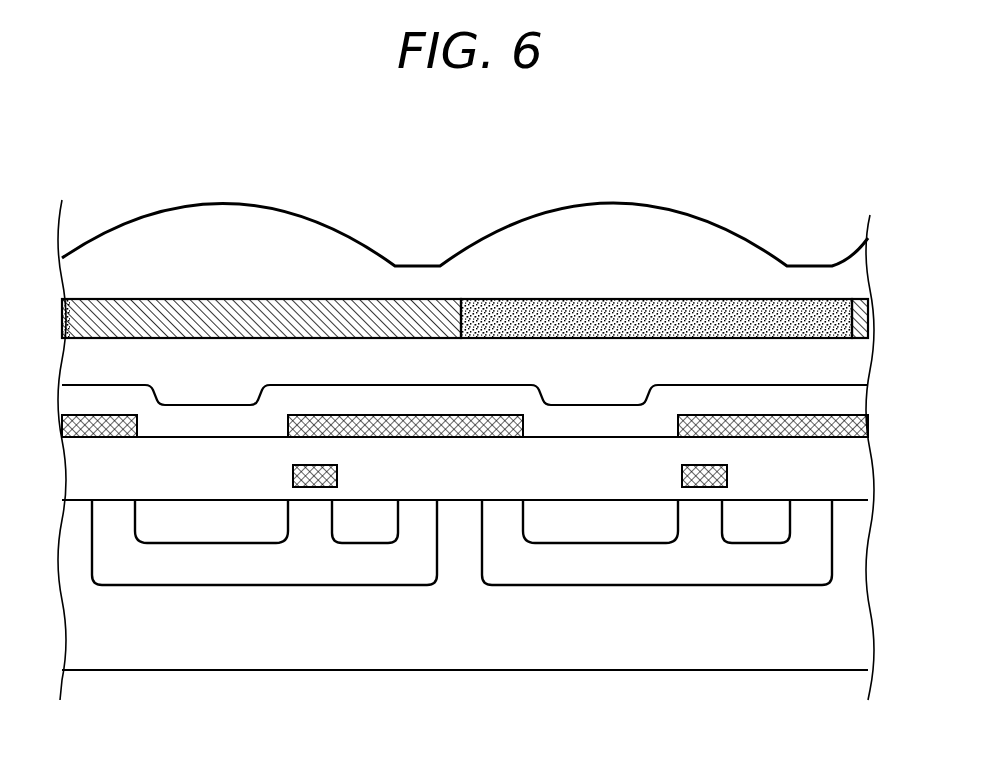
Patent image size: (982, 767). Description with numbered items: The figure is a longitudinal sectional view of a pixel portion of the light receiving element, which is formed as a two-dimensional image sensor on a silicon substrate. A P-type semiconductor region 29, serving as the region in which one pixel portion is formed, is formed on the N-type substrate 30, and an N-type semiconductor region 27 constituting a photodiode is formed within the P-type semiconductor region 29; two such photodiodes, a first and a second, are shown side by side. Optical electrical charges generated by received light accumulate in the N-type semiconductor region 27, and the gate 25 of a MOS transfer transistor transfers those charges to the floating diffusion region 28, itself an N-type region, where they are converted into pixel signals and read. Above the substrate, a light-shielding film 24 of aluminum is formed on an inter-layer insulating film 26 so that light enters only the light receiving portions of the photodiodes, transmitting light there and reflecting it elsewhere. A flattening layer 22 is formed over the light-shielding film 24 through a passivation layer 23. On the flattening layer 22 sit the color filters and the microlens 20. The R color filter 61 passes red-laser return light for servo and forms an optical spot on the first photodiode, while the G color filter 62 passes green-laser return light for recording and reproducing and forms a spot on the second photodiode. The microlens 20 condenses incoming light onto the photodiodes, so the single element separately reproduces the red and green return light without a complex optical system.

The microlens 20 is at (142, 235).
The flattening layer 22 is at (322, 362).
The passivation layer 23 is at (365, 400).
The light-shielding film 24 is at (122, 440).
The gate 25 is at (293, 476).
The inter-layer insulating film 26 is at (565, 468).
The N-type semiconductor region 27 is at (252, 538).
The floating diffusion region 28 is at (365, 535).
The P-type semiconductor region 29 is at (192, 577).
The N-type substrate 30 is at (473, 660).
The R color filter 61 is at (237, 298).
The G color filter 62 is at (655, 300).